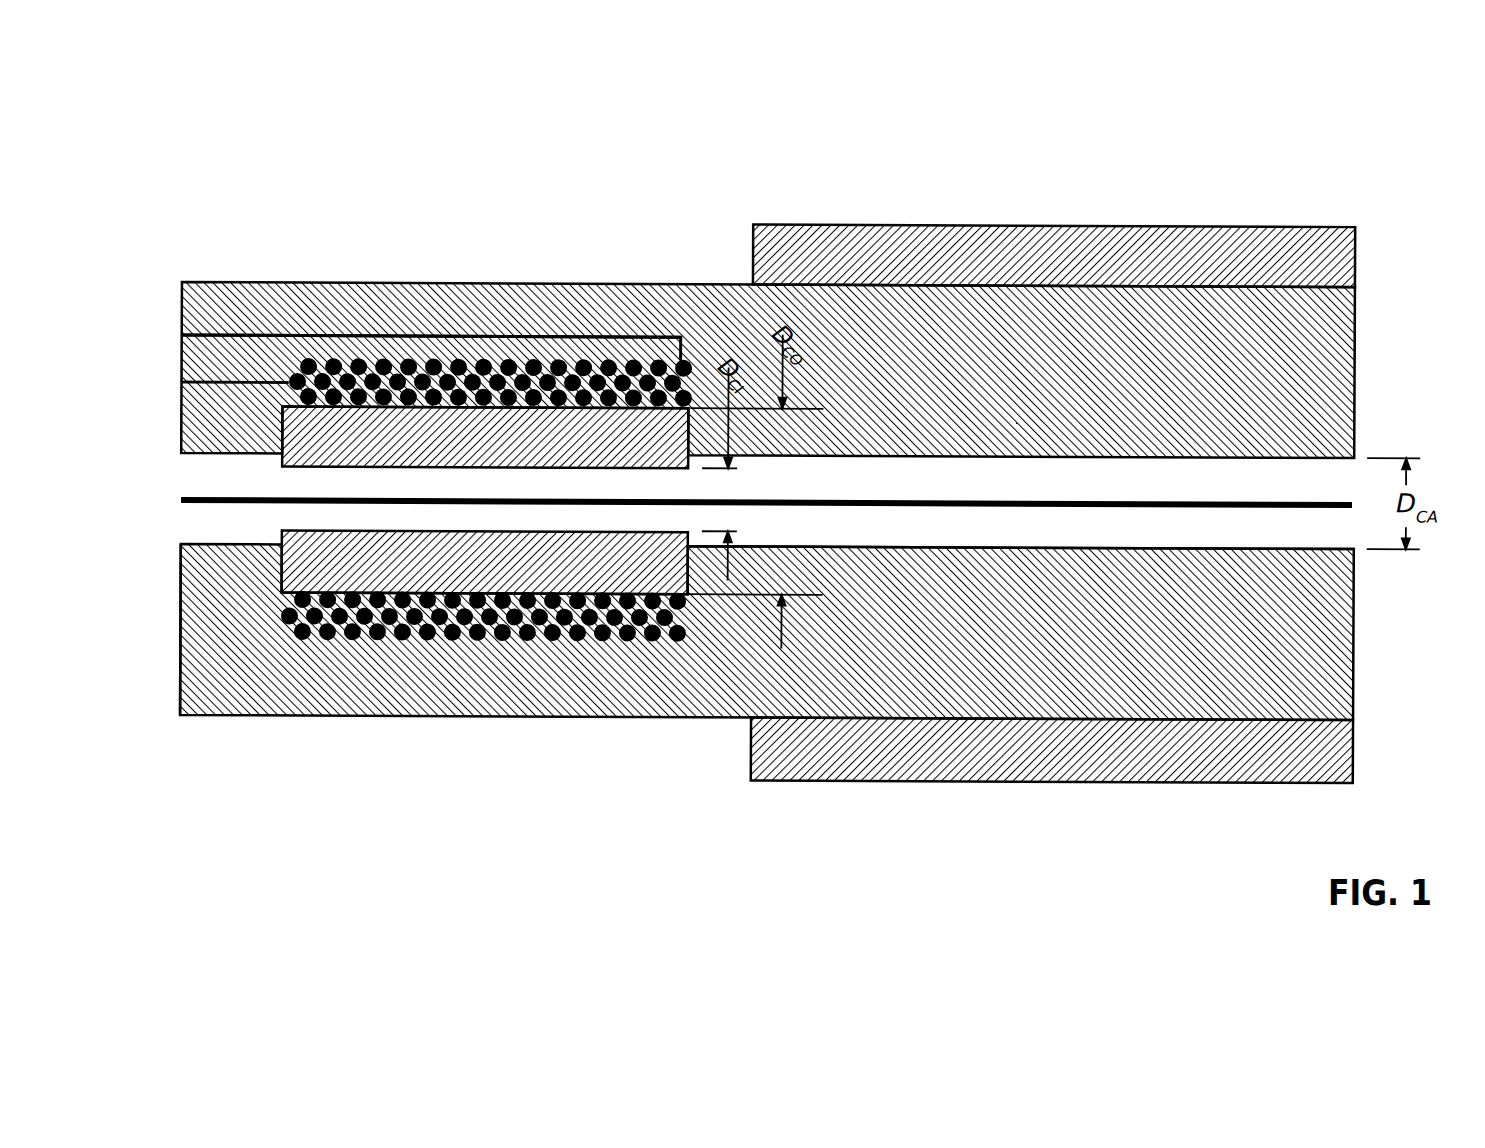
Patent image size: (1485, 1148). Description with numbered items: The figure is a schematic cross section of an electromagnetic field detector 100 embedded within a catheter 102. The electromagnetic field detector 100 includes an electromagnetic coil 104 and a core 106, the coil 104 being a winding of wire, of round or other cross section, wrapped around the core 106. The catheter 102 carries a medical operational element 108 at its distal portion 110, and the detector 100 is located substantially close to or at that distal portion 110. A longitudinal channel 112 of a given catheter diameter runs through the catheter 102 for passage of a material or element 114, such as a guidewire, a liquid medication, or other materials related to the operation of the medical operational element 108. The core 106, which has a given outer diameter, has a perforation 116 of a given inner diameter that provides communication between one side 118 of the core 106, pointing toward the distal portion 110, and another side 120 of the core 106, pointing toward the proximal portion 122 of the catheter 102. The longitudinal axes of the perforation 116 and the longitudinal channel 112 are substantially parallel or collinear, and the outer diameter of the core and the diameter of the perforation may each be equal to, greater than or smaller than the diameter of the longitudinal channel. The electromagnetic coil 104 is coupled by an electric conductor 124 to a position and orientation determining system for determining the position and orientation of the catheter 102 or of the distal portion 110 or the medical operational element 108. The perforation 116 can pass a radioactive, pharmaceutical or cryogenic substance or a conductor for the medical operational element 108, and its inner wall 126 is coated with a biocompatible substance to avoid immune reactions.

The electromagnetic field detector 100 is at (457, 238).
The catheter 102 is at (1354, 316).
The electromagnetic coil 104 is at (607, 356).
The core 106 is at (297, 560).
The medical operational element 108 is at (1283, 222).
The distal portion 110 is at (1055, 141).
The longitudinal channel 112 is at (1312, 475).
The material or element 114 is at (1352, 567).
The perforation 116 is at (488, 513).
The side of core 118 is at (710, 430).
The another side of core 120 is at (282, 428).
The proximal portion 122 is at (181, 568).
The electric conductor 124 is at (210, 382).
The inner wall of perforation 126 is at (570, 528).